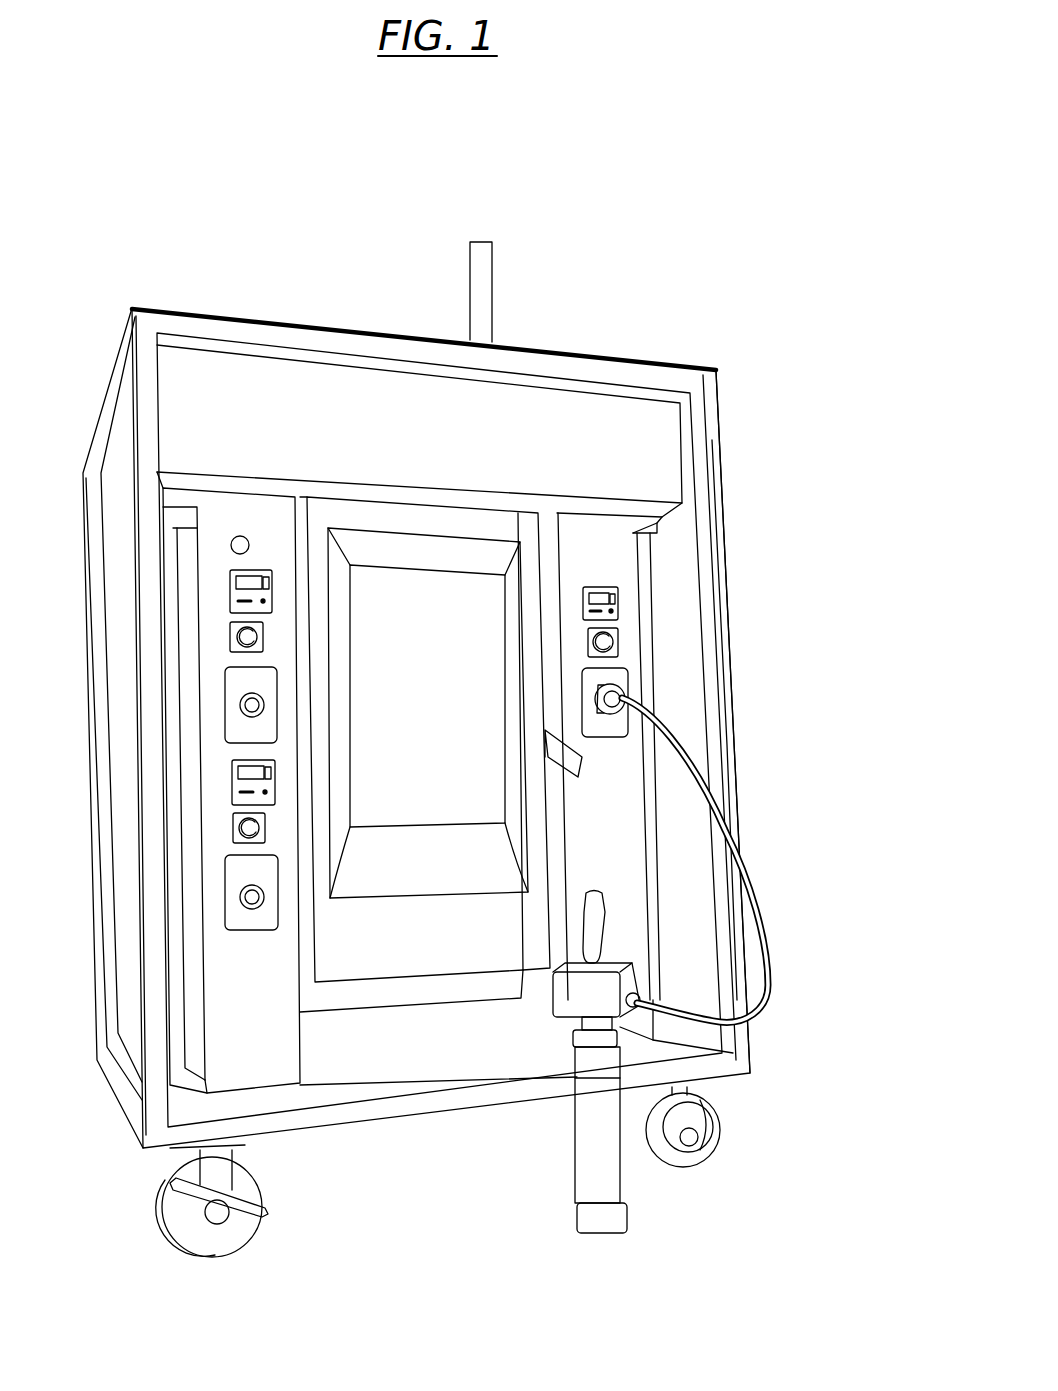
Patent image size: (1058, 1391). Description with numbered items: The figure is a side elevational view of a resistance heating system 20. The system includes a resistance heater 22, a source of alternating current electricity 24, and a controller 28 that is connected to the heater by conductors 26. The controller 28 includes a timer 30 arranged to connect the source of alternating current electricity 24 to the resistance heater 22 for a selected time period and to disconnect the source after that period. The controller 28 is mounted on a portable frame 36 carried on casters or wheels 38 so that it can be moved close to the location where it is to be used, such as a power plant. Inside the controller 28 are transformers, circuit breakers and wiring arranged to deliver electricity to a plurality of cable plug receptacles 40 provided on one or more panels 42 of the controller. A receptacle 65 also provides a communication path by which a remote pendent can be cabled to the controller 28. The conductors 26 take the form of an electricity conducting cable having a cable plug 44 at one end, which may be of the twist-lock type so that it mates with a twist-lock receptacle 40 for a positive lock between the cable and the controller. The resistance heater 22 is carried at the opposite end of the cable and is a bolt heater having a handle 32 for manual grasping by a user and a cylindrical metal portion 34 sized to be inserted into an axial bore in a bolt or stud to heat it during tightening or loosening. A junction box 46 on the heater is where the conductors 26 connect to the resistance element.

The resistance heating system 20 is at (768, 492).
The resistance heater 22 is at (655, 1213).
The source of alternating current electricity 24 is at (493, 281).
The conductors 26 is at (770, 990).
The controller 28 is at (655, 637).
The timer 30 is at (618, 600).
The handle 32 is at (598, 930).
The cylindrical metal portion 34 is at (627, 1192).
The portable frame 36 is at (737, 757).
The casters or wheels 38 is at (213, 1237).
The cable plug receptacles 40 is at (254, 900).
The panels 42 is at (617, 853).
The cable plug 44 is at (623, 697).
The junction box 46 is at (633, 982).
The receptacle 65 is at (243, 541).